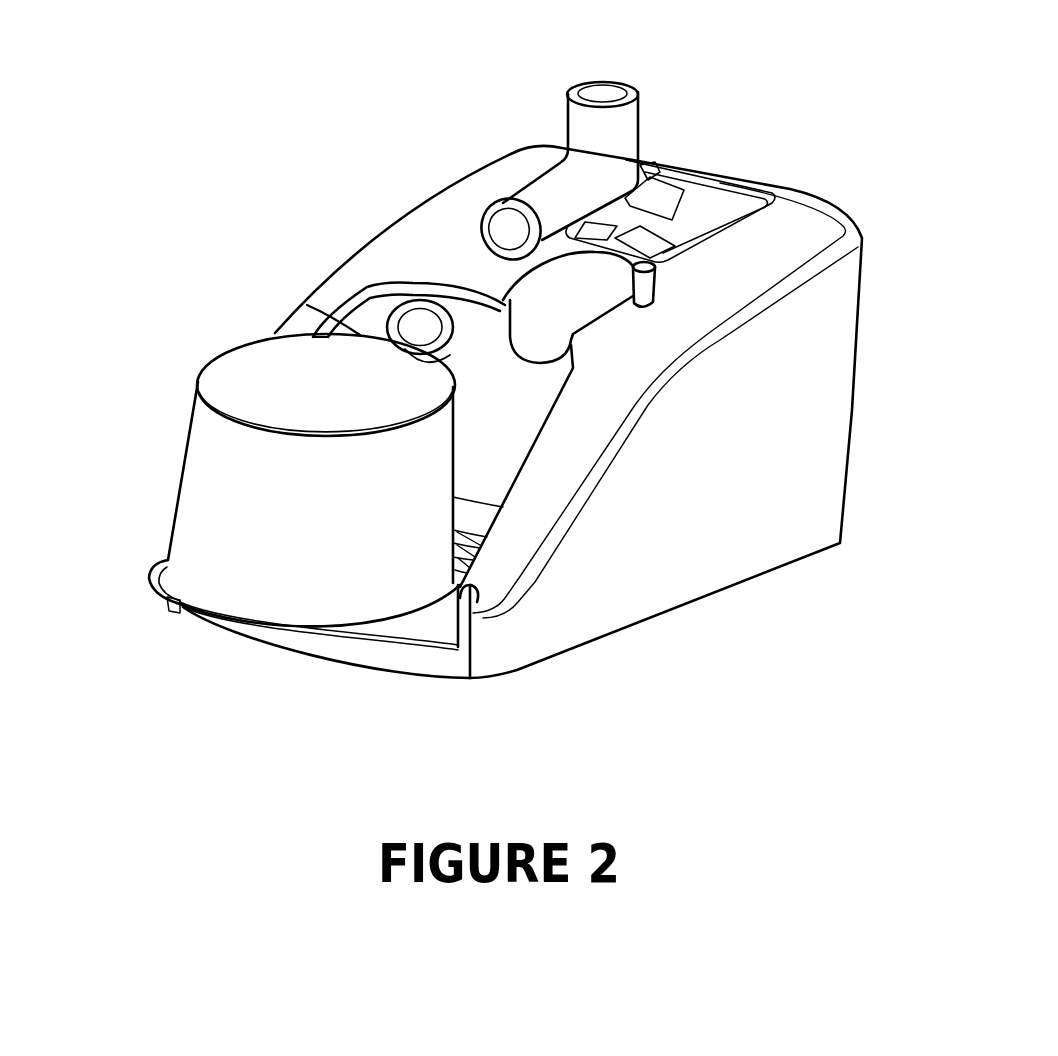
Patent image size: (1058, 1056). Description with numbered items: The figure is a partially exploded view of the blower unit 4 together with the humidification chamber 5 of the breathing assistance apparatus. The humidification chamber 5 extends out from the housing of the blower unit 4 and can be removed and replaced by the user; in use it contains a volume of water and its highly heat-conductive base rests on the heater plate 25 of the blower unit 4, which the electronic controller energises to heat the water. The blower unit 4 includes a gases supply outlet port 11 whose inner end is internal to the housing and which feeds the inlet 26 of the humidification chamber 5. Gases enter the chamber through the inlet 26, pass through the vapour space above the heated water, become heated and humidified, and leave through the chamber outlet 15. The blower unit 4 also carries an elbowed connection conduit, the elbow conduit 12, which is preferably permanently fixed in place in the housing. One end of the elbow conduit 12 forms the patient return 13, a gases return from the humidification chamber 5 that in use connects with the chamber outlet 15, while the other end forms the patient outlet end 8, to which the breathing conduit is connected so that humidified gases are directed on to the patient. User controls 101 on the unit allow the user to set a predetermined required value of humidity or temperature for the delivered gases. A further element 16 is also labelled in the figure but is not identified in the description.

The blower unit 4 is at (838, 407).
The humidification chamber 5 is at (197, 504).
The patient outlet end 8 is at (600, 97).
The gases supply outlet port 11 is at (370, 290).
The elbow conduit 12 is at (617, 142).
The patient return 13 is at (505, 222).
The chamber outlet 15 is at (445, 356).
The cradle wall 16 is at (530, 320).
The heater plate 25 is at (460, 598).
The inlet 26 is at (325, 325).
The controls 101 is at (713, 227).